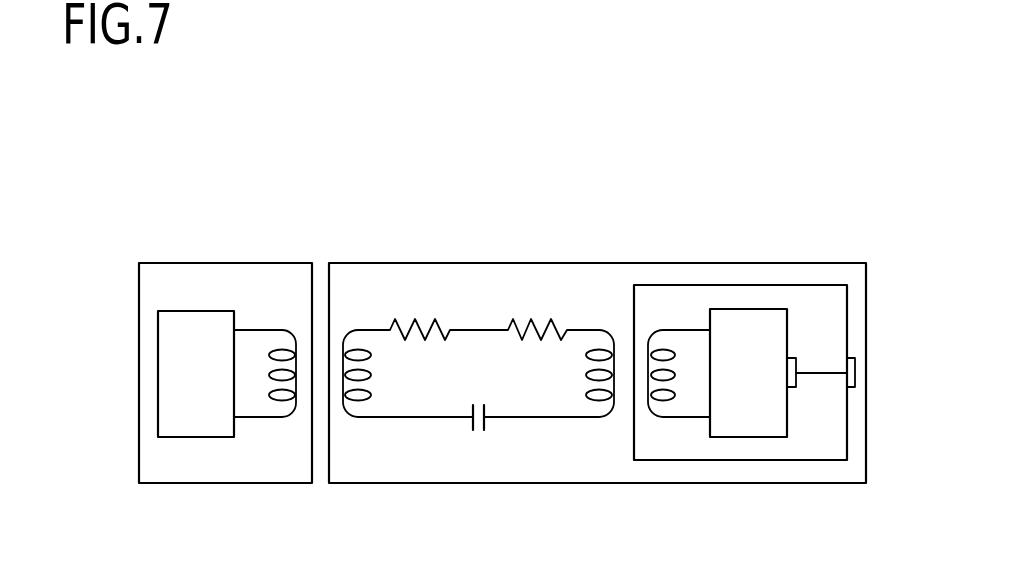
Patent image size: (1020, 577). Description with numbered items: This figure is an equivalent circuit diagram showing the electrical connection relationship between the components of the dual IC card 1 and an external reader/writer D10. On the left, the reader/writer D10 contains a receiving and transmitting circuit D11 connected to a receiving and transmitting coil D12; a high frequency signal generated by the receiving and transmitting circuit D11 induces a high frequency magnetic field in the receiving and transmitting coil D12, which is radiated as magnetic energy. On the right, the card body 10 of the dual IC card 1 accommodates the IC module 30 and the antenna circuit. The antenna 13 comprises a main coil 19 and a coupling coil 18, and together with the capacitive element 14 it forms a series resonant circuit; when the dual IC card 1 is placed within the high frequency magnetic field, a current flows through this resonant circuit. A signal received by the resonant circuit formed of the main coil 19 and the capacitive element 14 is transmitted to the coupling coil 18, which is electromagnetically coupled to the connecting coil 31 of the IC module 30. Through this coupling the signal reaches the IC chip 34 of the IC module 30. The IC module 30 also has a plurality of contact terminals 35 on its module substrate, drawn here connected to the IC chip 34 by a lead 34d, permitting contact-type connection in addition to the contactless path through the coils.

The dual IC card 1 is at (830, 236).
The card body 10 is at (815, 460).
The antenna 13 is at (452, 440).
The capacitive element 14 is at (487, 421).
The coupling coil 18 is at (607, 417).
The main coil 19 is at (350, 417).
The IC module 30 is at (423, 263).
The connecting coil 31 is at (682, 417).
The IC chip 34 is at (750, 309).
The connector 34d is at (790, 358).
The contact terminals 35 is at (855, 373).
The reader/writer D10 is at (185, 252).
The receiving and transmitting circuit D11 is at (207, 437).
The receiving and transmitting coil D12 is at (258, 417).